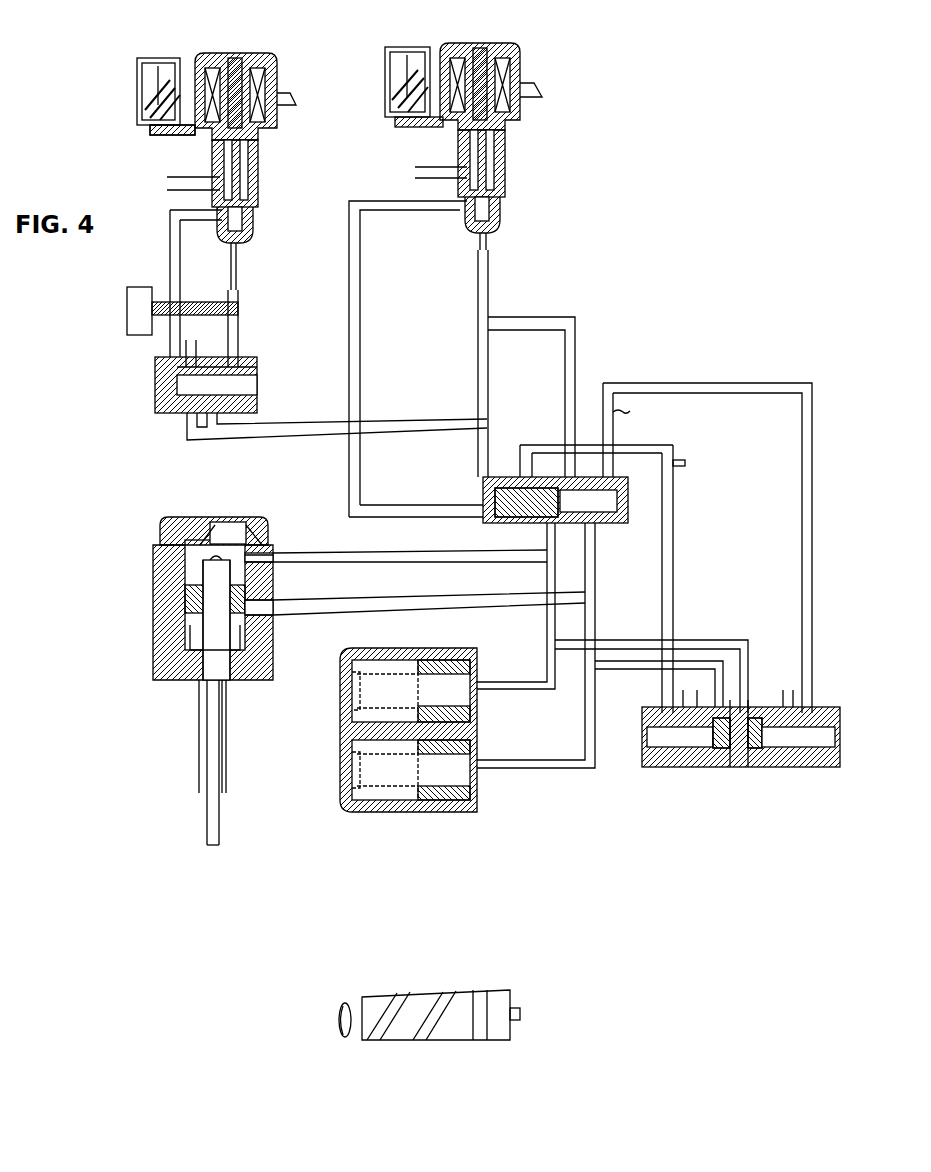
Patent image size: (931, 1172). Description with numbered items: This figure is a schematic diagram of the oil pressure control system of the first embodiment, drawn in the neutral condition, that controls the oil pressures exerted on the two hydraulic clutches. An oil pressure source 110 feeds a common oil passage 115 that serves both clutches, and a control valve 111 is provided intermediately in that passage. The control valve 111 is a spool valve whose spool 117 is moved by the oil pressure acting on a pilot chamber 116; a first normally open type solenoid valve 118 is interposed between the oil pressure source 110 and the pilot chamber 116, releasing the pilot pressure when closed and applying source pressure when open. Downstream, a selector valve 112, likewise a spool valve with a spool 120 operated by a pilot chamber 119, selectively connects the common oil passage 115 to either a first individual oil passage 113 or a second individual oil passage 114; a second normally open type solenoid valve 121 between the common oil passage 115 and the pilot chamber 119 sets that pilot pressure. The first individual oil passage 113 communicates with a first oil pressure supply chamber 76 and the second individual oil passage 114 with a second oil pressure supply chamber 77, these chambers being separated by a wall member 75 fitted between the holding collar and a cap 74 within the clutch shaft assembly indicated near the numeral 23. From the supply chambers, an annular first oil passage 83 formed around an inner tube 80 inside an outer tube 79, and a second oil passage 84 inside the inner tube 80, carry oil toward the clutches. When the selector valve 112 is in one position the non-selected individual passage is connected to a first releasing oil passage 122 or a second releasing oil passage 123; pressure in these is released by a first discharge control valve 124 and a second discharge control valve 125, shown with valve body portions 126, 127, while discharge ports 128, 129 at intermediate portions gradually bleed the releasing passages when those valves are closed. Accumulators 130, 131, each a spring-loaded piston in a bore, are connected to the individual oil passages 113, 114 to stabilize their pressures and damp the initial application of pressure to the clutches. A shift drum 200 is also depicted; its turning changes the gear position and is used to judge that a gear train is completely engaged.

The cylinder head 23 is at (219, 593).
The cap 74 is at (258, 520).
The wall member 75 is at (186, 612).
The first oil pressure supply chamber 76 is at (250, 655).
The second oil pressure supply chamber 77 is at (266, 555).
The outer tube 79 is at (199, 758).
The inner tube 80 is at (207, 818).
The first oil passage 83 is at (222, 800).
The second oil passage 84 is at (213, 848).
The oil pressure source 110 is at (137, 337).
The control valve 111 is at (233, 368).
The selector valve 112 is at (519, 453).
The first individual oil passage 113 is at (366, 601).
The second individual oil passage 114 is at (366, 556).
The common oil passage 115 is at (405, 420).
The pilot chamber 116 is at (177, 412).
The spool 117 is at (257, 402).
The first normally open type solenoid valve 118 is at (285, 58).
The pilot chamber 119 is at (486, 487).
The spool 120 is at (592, 525).
The second normally open type solenoid valve 121 is at (522, 46).
The first releasing oil passage 122 is at (708, 383).
The second releasing oil passage 123 is at (673, 579).
The first discharge control valve 124 is at (734, 757).
The second discharge control valve 125 is at (680, 768).
The valve body 126 is at (755, 768).
The valve body 127 is at (722, 768).
The discharge port 128 is at (630, 411).
The discharge port 129 is at (690, 462).
The accumulator 130 is at (436, 737).
The accumulator 131 is at (488, 663).
The shift drum 200 is at (450, 1042).